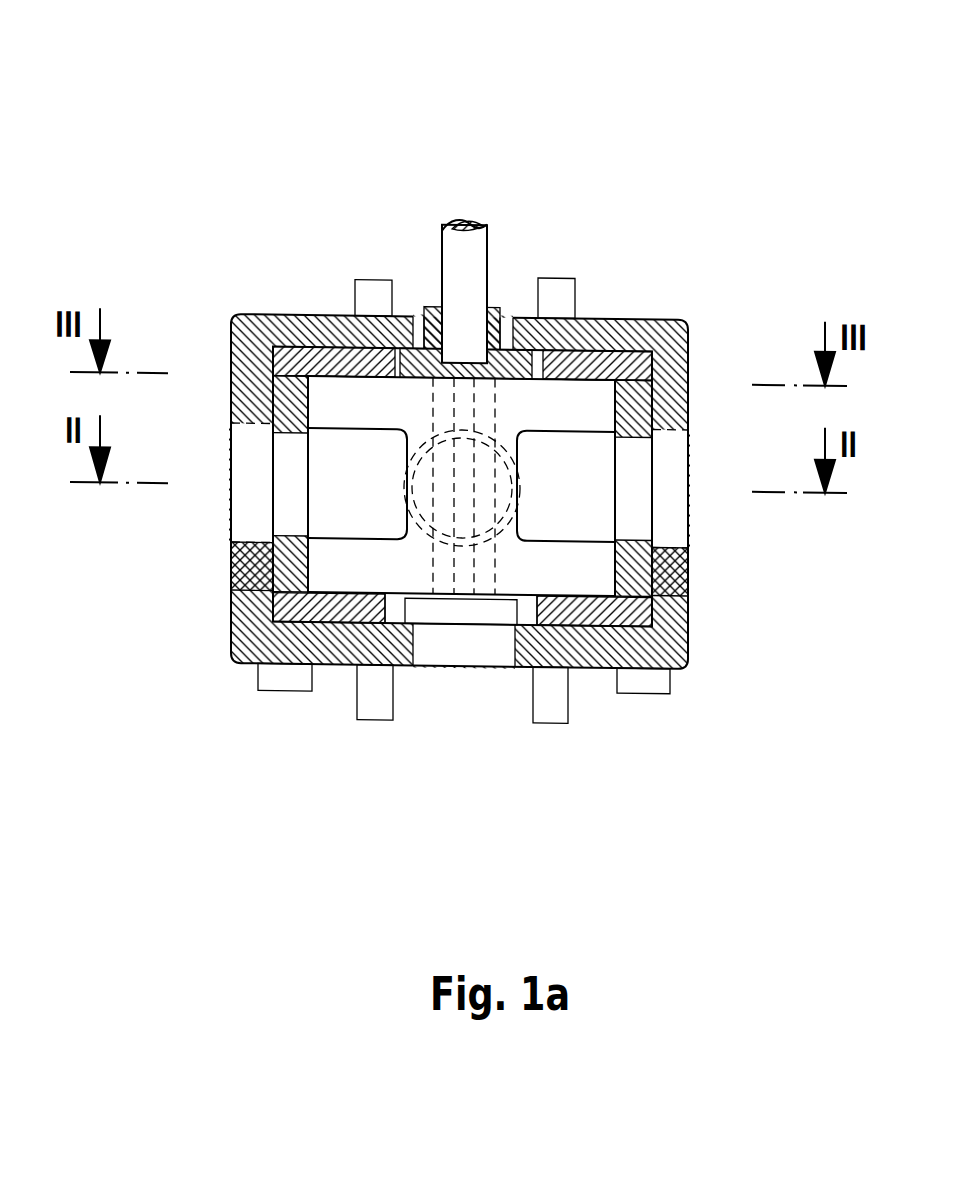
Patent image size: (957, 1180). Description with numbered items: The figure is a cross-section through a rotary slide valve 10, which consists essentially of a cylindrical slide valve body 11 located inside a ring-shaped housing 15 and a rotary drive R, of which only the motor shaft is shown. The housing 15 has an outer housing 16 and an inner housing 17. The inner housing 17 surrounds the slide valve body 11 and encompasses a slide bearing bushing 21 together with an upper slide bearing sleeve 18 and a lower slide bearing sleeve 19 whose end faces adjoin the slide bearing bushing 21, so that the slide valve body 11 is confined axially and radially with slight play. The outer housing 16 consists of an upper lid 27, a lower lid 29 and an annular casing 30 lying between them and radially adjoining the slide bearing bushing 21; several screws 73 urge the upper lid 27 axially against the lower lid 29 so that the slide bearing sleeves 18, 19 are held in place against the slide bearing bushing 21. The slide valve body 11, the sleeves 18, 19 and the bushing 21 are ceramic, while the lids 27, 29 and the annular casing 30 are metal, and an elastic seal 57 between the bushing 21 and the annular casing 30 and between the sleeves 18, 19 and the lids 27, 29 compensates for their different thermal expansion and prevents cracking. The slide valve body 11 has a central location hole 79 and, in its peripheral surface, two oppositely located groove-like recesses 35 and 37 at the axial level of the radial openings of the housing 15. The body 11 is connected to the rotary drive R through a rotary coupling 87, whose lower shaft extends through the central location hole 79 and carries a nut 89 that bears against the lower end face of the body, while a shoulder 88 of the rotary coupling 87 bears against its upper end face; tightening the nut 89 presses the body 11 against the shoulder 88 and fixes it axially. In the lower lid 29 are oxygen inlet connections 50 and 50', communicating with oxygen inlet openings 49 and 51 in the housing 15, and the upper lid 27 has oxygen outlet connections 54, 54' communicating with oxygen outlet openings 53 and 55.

The rotary slide valve 10 is at (373, 150).
The slide valve body 11 is at (335, 392).
The housing 15 is at (692, 655).
The outer housing 16 is at (678, 662).
The inner housing 17 is at (640, 668).
The upper slide bearing sleeve 18 is at (672, 314).
The lower slide bearing sleeve 19 is at (297, 606).
The slide bearing bushing 21 is at (618, 592).
The upper lid 27 is at (663, 314).
The lower lid 29 is at (625, 623).
The annular casing 30 is at (245, 570).
The groove-like recess 35 is at (325, 501).
The groove-like recess 37 is at (600, 497).
The oxygen inlet opening 49 is at (370, 630).
The oxygen inlet connection 50 is at (375, 727).
The oxygen inlet connection 50' is at (553, 728).
The oxygen inlet opening 51 is at (560, 636).
The oxygen outlet opening 53 is at (353, 323).
The oxygen outlet connection 54 is at (373, 254).
The oxygen outlet connection 54' is at (562, 256).
The oxygen outlet opening 55 is at (585, 312).
The elastic seal 57 is at (272, 483).
The screw 73 is at (273, 679).
The central location hole 79 is at (433, 578).
The rotary coupling 87 is at (498, 326).
The shoulder 88 is at (420, 343).
The nut 89 is at (485, 609).
The rotary drive R is at (457, 242).